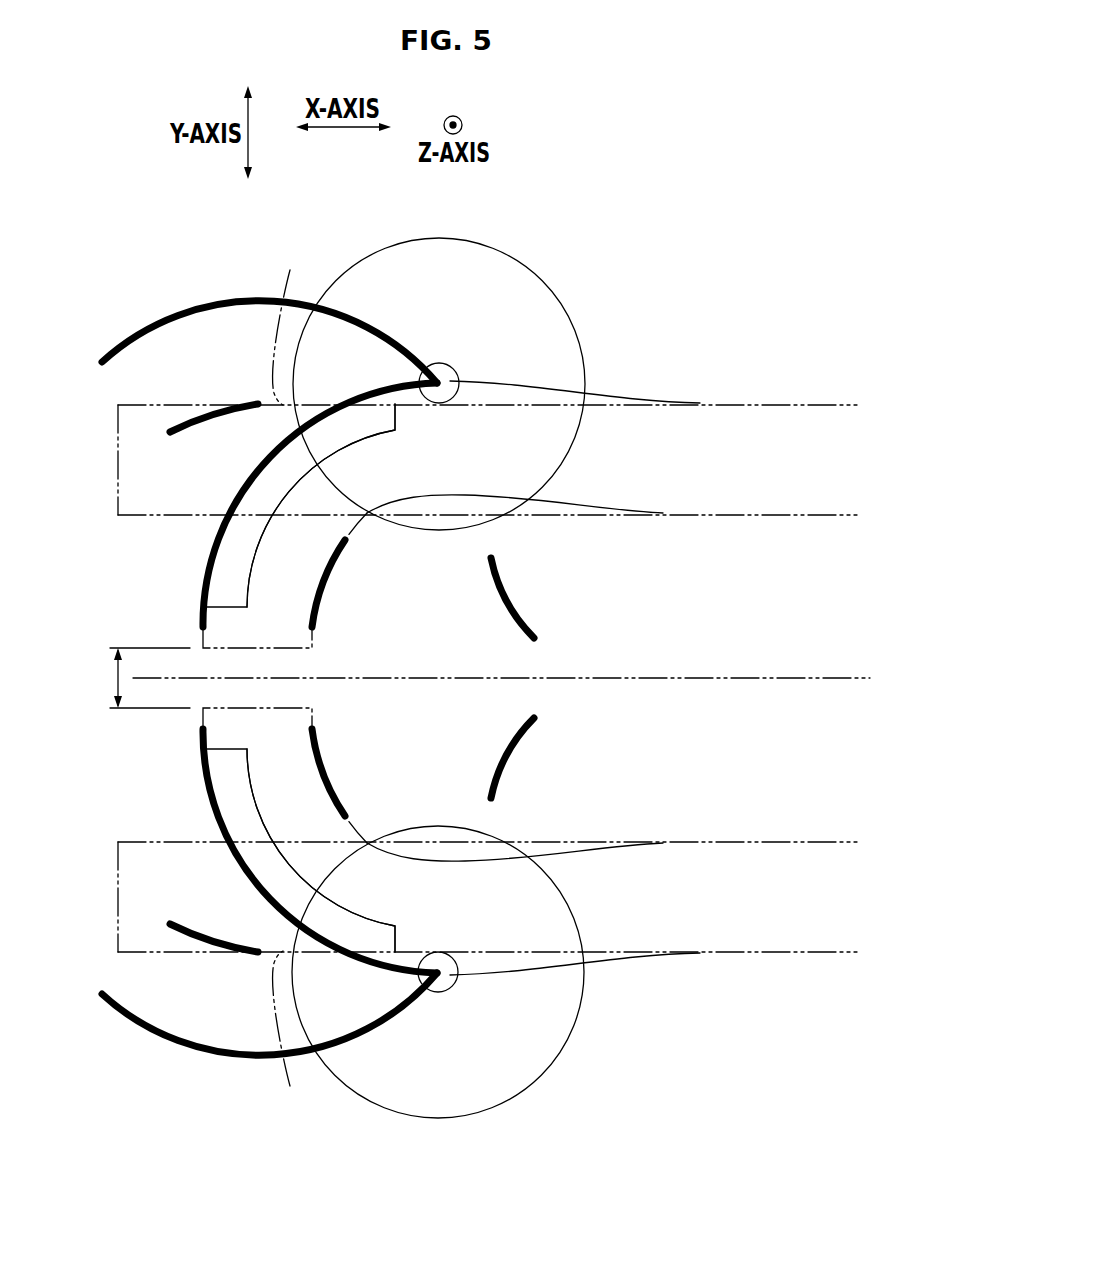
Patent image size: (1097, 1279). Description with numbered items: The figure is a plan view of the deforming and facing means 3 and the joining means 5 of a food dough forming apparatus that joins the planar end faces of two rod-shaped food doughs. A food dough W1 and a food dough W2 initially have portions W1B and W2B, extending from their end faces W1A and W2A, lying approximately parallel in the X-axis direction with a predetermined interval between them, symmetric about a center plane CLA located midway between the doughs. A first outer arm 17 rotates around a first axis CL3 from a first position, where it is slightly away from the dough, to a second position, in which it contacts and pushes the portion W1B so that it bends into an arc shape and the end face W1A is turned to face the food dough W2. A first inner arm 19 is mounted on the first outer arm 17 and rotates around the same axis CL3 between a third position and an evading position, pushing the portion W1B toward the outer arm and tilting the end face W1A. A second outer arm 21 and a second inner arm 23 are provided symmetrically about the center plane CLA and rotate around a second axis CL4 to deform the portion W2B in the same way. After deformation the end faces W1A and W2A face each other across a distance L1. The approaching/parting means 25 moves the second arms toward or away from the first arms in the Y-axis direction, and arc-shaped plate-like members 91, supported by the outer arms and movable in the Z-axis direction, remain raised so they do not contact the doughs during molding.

The deforming and facing means 3 is at (492, 657).
The joining means 5 is at (439, 384).
The first outer arm 17 is at (162, 1033).
The first inner arm 19 is at (178, 930).
The second outer arm 21 is at (162, 325).
The second inner arm 23 is at (178, 428).
The approaching/parting means 25 is at (644, 321).
The arc-shaped plate-like member 91 is at (367, 440).
The food dough W1 is at (768, 953).
The food dough W2 is at (768, 402).
The end face W1A is at (63, 829).
The end face W2A is at (118, 485).
The portion W1B is at (290, 1086).
The portion W2B is at (290, 272).
The first axis CL3 is at (456, 983).
The second axis CL4 is at (456, 374).
The center plane CLA is at (768, 677).
The distance L1 is at (139, 678).